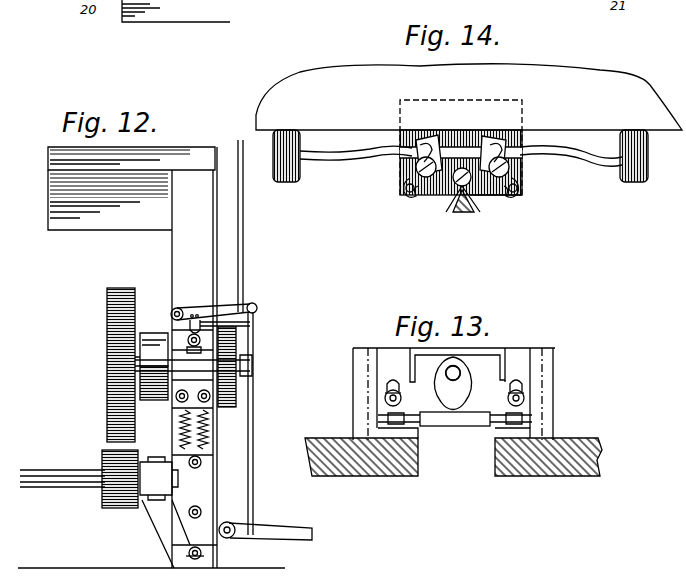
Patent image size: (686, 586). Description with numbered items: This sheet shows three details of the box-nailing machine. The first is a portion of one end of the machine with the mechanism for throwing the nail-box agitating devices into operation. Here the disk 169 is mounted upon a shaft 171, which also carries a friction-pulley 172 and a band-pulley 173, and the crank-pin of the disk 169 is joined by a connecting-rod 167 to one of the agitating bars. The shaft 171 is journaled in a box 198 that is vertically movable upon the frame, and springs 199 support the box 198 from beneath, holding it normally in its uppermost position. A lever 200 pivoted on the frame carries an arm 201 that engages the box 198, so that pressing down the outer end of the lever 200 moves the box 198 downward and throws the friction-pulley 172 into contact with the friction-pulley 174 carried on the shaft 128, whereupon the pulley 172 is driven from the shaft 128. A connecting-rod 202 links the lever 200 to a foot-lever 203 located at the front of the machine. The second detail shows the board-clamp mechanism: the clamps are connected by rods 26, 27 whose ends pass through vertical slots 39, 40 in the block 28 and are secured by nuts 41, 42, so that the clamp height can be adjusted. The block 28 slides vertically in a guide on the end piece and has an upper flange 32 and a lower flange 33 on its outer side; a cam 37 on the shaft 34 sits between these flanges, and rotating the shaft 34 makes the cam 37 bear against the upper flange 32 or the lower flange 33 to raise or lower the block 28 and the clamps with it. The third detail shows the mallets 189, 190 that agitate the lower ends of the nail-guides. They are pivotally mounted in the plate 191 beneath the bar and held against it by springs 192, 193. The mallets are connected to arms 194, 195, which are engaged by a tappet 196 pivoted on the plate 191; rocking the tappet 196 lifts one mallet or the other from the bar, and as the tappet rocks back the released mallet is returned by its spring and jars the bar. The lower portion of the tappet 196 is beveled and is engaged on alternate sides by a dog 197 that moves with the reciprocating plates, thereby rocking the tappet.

In FIG. 12, the shaft 128 is at (42, 468).
In FIG. 12, the connecting-rod 167 is at (244, 260).
In FIG. 12, the disk 169 is at (238, 392).
In FIG. 12, the shaft 171 is at (139, 333).
In FIG. 12, the friction-pulley 172 is at (110, 334).
In FIG. 12, the band-pulley 173 is at (158, 401).
In FIG. 12, the friction-pulley 174 is at (105, 506).
In FIG. 12, the box 198 is at (197, 405).
In FIG. 12, the springs 199 is at (200, 453).
In FIG. 12, the lever 200 is at (213, 309).
In FIG. 12, the arm 201 is at (236, 325).
In FIG. 12, the connecting-rod 202 is at (252, 468).
In FIG. 12, the foot-lever 203 is at (291, 548).
In FIG. 14, the mallet 189 is at (347, 172).
In FIG. 14, the mallet 190 is at (578, 164).
In FIG. 14, the plate 191 is at (480, 195).
In FIG. 14, the spring 192 is at (417, 197).
In FIG. 14, the spring 193 is at (516, 197).
In FIG. 14, the arm 194 is at (440, 142).
In FIG. 14, the arm 195 is at (512, 142).
In FIG. 14, the tappet 196 is at (461, 170).
In FIG. 14, the dog 197 is at (470, 213).
In FIG. 13, the rod 26 is at (525, 395).
In FIG. 13, the rod 27 is at (384, 399).
In FIG. 13, the block 28 is at (492, 384).
In FIG. 13, the upper flange 32 is at (472, 352).
In FIG. 13, the lower flange 33 is at (458, 426).
In FIG. 13, the shaft 34 is at (449, 378).
In FIG. 13, the cam 37 is at (453, 383).
In FIG. 13, the slot 39 is at (518, 380).
In FIG. 13, the slot 40 is at (388, 389).
In FIG. 13, the nut 41 is at (525, 402).
In FIG. 13, the nut 42 is at (401, 395).